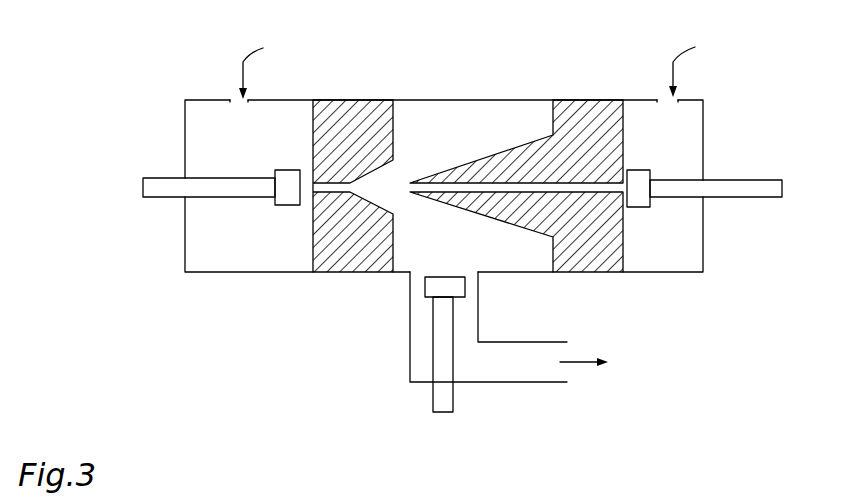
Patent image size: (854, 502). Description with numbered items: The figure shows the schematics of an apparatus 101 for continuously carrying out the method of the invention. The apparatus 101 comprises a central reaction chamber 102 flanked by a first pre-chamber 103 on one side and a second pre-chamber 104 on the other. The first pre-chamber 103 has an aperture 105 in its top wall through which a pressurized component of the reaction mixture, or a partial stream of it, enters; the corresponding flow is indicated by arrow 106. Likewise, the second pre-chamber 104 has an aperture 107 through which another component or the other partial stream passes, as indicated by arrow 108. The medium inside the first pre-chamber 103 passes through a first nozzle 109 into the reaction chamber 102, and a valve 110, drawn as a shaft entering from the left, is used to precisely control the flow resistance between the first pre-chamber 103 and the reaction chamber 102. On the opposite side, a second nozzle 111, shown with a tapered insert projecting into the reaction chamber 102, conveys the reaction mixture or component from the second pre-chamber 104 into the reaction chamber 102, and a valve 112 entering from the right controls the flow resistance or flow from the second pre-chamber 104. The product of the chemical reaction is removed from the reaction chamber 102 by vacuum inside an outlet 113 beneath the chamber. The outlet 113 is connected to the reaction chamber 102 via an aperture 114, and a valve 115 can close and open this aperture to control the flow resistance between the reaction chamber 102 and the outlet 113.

The apparatus 101 is at (692, 389).
The reaction chamber 102 is at (457, 123).
The first pre-chamber 103 is at (232, 255).
The second pre-chamber 104 is at (678, 255).
The aperture 105 is at (230, 104).
The arrow 106 is at (277, 60).
The aperture 107 is at (667, 103).
The arrow 108 is at (714, 63).
The first nozzle 109 is at (350, 100).
The valve 110 is at (143, 189).
The second nozzle 111 is at (580, 100).
The valve 112 is at (763, 200).
The outlet 113 is at (518, 375).
The aperture 114 is at (440, 268).
The valve 115 is at (440, 412).